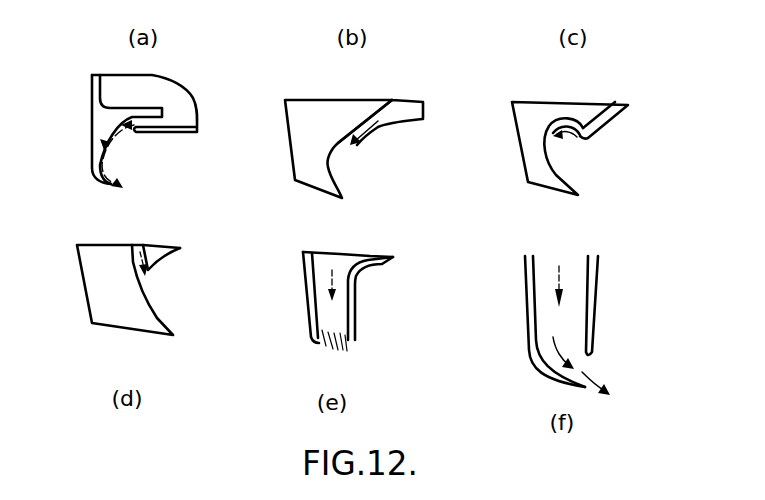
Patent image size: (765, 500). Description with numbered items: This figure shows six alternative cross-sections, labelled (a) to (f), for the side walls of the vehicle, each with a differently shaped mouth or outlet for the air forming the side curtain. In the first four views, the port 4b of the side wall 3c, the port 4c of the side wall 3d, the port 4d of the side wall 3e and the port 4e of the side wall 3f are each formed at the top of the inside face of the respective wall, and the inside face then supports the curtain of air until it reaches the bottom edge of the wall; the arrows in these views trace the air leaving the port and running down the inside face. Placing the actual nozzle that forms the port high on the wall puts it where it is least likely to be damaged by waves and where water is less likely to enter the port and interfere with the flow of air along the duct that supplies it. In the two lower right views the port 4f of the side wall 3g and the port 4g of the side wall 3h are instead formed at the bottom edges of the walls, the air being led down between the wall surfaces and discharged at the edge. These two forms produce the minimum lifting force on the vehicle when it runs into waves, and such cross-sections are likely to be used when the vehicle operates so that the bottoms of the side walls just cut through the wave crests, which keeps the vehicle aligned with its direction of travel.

The side wall 3c is at (100, 117).
The port 4b is at (128, 130).
The side wall 3d is at (299, 133).
The port 4c is at (364, 141).
The side wall 3e is at (530, 150).
The port 4d is at (567, 138).
The side wall 3f is at (100, 282).
The port 4e is at (150, 275).
The side wall 3g is at (313, 305).
The port 4f is at (338, 327).
The side wall 3h is at (532, 332).
The port 4g is at (580, 365).